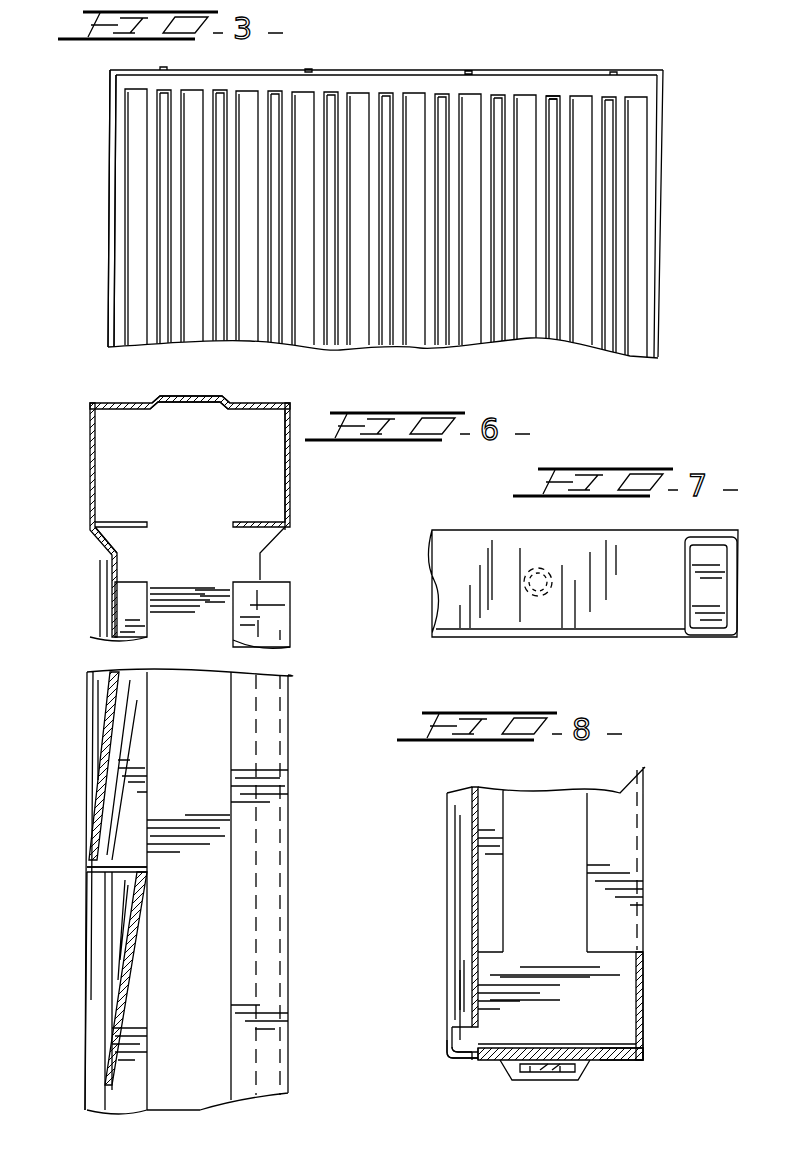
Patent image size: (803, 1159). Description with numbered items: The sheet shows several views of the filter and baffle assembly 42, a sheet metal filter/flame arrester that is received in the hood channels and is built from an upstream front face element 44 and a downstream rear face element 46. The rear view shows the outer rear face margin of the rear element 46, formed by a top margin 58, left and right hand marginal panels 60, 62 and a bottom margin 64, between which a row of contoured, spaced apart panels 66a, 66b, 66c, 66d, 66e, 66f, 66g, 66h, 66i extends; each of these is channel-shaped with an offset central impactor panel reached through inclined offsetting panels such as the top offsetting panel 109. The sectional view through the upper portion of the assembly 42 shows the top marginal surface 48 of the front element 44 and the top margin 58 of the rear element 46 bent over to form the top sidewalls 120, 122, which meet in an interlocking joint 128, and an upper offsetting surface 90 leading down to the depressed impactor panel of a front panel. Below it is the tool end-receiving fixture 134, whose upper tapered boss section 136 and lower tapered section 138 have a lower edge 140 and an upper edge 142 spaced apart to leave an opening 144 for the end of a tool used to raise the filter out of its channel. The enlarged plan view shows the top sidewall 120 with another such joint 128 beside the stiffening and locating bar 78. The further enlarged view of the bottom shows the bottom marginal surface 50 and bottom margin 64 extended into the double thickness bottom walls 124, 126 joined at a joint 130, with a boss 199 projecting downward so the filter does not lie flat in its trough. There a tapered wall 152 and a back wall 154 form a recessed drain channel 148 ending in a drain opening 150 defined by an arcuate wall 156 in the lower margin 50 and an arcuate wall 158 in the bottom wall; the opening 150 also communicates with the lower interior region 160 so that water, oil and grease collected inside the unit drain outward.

In FIG. 3, the filter and baffle assembly 42 is at (100, 126).
In FIG. 6, the upstream front face element 44 is at (85, 617).
In FIG. 3, the downstream rear face element 46 is at (100, 185).
In FIG. 6, the downstream rear face element 46 is at (298, 609).
In FIG. 6, the top marginal surface 48 is at (92, 440).
In FIG. 8, the bottom marginal surface 50 is at (450, 955).
In FIG. 3, the top margin 58 is at (350, 85).
In FIG. 6, the top margin 58 is at (290, 478).
In FIG. 3, the left hand marginal panel 60 is at (120, 282).
In FIG. 3, the right hand marginal panel 62 is at (650, 278).
In FIG. 8, the bottom margin 64 is at (642, 1022).
In FIG. 3, the contoured panel 66a is at (168, 118).
In FIG. 3, the contoured panel 66b is at (222, 117).
In FIG. 3, the contoured panel 66c is at (277, 118).
In FIG. 3, the contoured panel 66d is at (330, 118).
In FIG. 3, the contoured panel 66e is at (383, 340).
In FIG. 3, the contoured panel 66f is at (437, 340).
In FIG. 3, the contoured panel 66g is at (490, 335).
In FIG. 3, the contoured panel 66h is at (547, 332).
In FIG. 3, the contoured panel 66i is at (600, 335).
In FIG. 7, the stiffening and locating bar 78 is at (706, 624).
In FIG. 6, the upper offsetting surface 90 is at (100, 553).
In FIG. 3, the top offsetting panel 109 is at (548, 97).
In FIG. 6, the top sidewall 120 is at (140, 386).
In FIG. 7, the top sidewall 120 is at (618, 612).
In FIG. 6, the top sidewall 122 is at (290, 452).
In FIG. 8, the bottom wall 124 is at (505, 1062).
In FIG. 8, the bottom wall 126 is at (605, 1062).
In FIG. 6, the joint 128 is at (218, 392).
In FIG. 7, the joint 128 is at (530, 602).
In FIG. 8, the joint 130 is at (556, 1080).
In FIG. 6, the tool end-receiving fixture 134 is at (86, 879).
In FIG. 6, the upper tapered boss section 136 is at (98, 826).
In FIG. 6, the lower tapered section 138 is at (130, 952).
In FIG. 6, the lower edge 140 is at (100, 878).
In FIG. 6, the upper edge 142 is at (128, 868).
In FIG. 6, the opening 144 is at (98, 891).
In FIG. 8, the channel 148 is at (462, 970).
In FIG. 8, the drain opening 150 is at (472, 1036).
In FIG. 8, the tapered wall 152 is at (455, 1012).
In FIG. 8, the back wall 154 is at (482, 1005).
In FIG. 8, the arcuate wall 156 is at (448, 1050).
In FIG. 8, the arcuate wall 158 is at (473, 1062).
In FIG. 8, the lower interior region 160 is at (582, 1043).
In FIG. 8, the boss 199 is at (565, 1070).